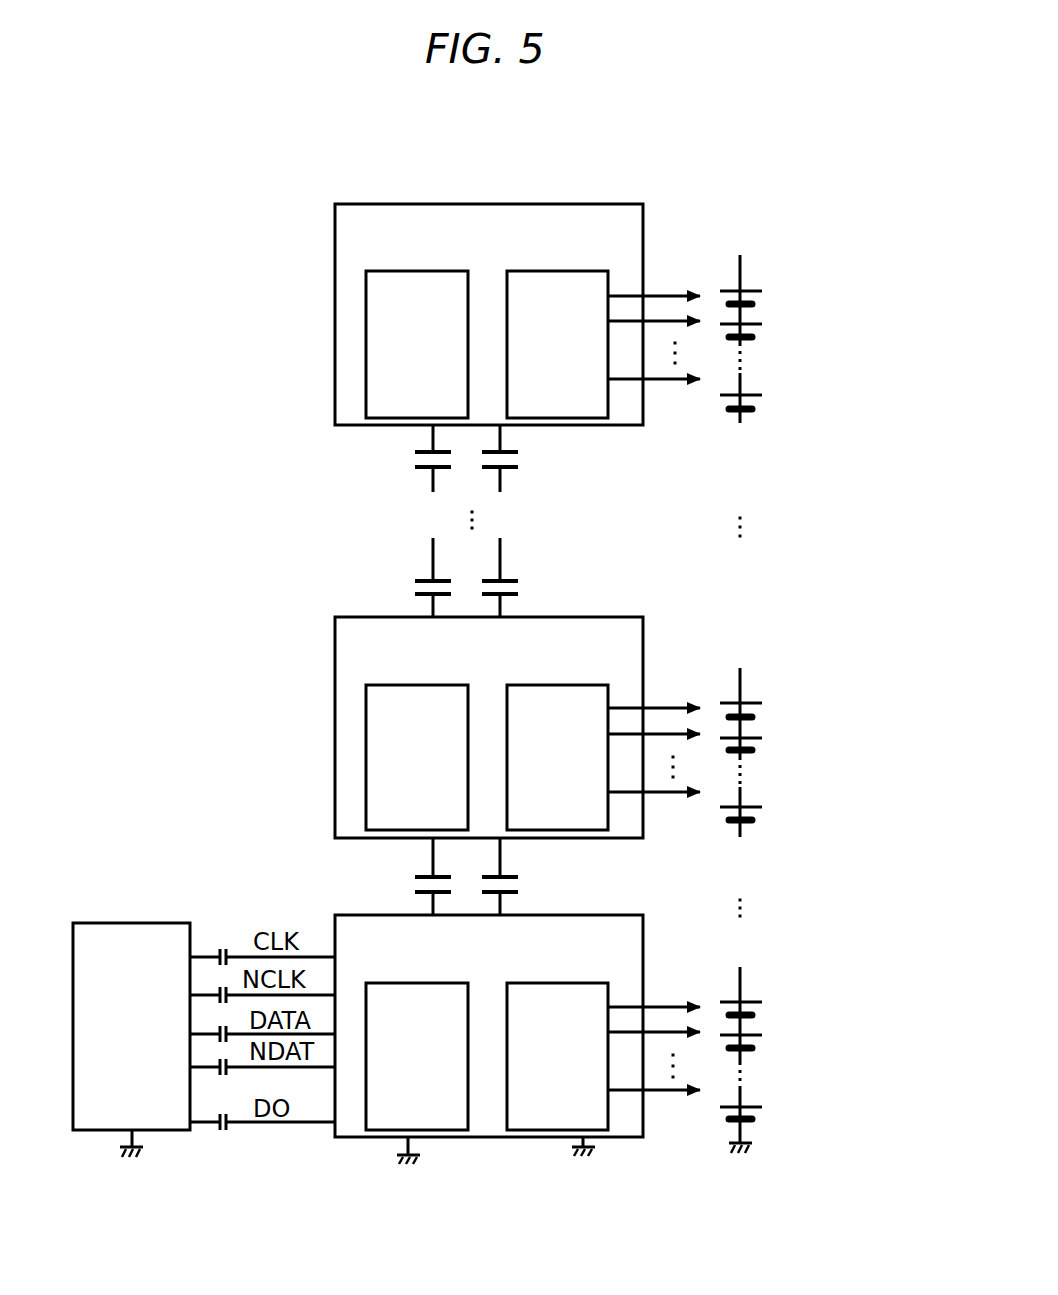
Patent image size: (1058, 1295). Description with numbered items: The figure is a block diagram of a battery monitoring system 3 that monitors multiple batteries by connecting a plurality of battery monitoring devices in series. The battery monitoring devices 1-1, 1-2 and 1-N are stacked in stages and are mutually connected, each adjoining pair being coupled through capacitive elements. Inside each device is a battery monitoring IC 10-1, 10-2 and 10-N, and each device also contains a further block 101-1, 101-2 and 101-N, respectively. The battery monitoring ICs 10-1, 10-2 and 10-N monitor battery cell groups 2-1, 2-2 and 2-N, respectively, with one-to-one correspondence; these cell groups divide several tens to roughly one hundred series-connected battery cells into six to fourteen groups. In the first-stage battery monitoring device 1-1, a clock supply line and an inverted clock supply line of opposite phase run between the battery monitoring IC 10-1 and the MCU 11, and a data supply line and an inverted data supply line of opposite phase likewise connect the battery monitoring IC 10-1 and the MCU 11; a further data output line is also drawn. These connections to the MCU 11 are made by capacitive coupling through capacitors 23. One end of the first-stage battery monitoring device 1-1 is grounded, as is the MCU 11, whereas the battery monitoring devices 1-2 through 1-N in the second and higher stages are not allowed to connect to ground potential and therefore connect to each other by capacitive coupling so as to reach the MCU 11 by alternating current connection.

The battery monitoring system 3 is at (432, 176).
The battery monitoring device 1-N is at (543, 207).
The battery monitoring device 1-2 is at (540, 621).
The battery monitoring device 1-1 is at (557, 918).
The communication circuit (Nth) 101-N is at (417, 281).
The communication circuit (2nd) 101-2 is at (417, 695).
The communication circuit (1st) 101-1 is at (417, 993).
The battery monitoring IC 10-N is at (557, 281).
The battery monitoring IC 10-2 is at (557, 695).
The battery monitoring IC 10-1 is at (557, 993).
The battery cell group 2-N is at (786, 292).
The battery cell group 2-2 is at (787, 705).
The battery cell group 2-1 is at (787, 1003).
The MCU 11 is at (110, 923).
The capacitors 23 is at (220, 992).